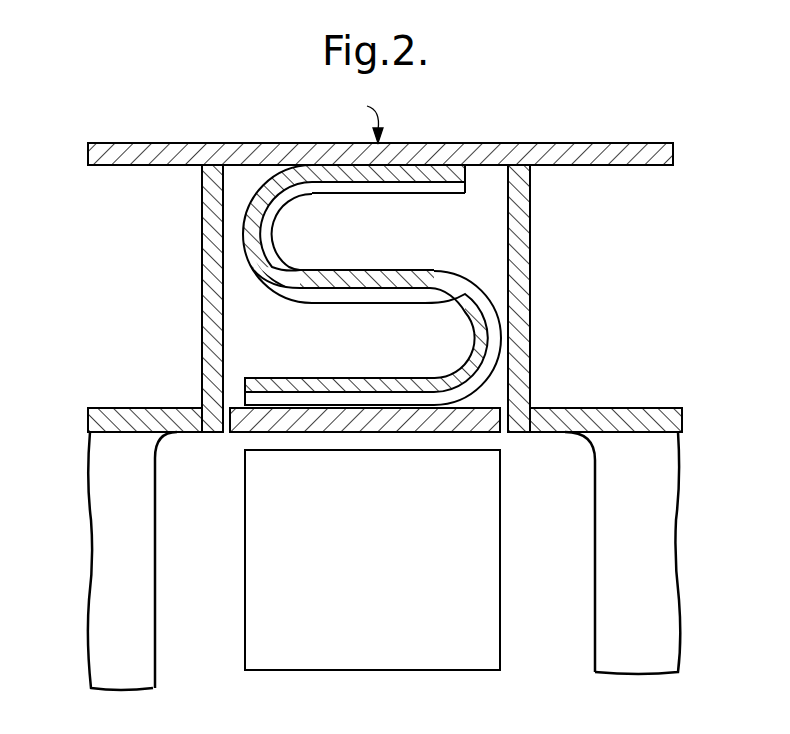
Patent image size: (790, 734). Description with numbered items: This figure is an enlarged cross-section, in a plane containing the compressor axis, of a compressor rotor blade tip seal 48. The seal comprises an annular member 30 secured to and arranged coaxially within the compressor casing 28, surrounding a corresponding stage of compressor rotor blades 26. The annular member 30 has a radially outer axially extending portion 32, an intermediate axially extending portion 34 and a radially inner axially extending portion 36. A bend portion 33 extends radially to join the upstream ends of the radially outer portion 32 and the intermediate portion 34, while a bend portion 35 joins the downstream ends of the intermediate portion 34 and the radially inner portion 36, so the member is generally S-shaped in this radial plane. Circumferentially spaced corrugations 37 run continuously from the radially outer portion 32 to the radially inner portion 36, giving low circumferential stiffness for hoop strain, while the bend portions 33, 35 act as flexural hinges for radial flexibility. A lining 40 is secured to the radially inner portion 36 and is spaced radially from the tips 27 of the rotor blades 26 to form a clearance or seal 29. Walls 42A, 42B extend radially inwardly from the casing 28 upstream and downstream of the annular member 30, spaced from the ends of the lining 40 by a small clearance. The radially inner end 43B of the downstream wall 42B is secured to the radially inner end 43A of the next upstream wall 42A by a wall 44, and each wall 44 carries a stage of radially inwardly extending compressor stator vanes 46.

The compressor rotor blades 26 is at (460, 517).
The tips 27 is at (313, 458).
The compressor casing 28 is at (487, 143).
The clearance or seal 29 is at (450, 438).
The annular member 30 is at (372, 282).
The radially outer axially extending portion 32 is at (357, 173).
The bend portion 33 is at (255, 230).
The intermediate axially extending portion 34 is at (378, 283).
The bend portion 35 is at (483, 336).
The radially inner axially extending portion 36 is at (352, 388).
The circumferentially spaced corrugations 37 is at (402, 186).
The lining 40 is at (478, 417).
The wall 42A is at (207, 330).
The wall 42B is at (530, 272).
The radially inner end of wall 42A 43A is at (200, 407).
The radially inner end of wall 42B 43B is at (530, 406).
The wall 44 is at (150, 415).
The compressor stator vanes 46 is at (122, 568).
The compressor rotor blade tip seal 48 is at (356, 118).